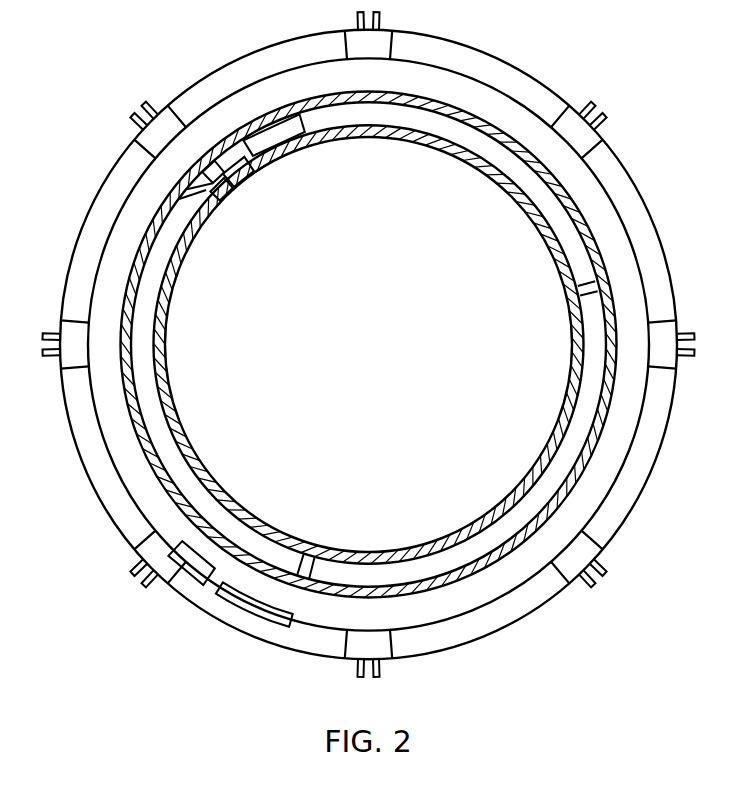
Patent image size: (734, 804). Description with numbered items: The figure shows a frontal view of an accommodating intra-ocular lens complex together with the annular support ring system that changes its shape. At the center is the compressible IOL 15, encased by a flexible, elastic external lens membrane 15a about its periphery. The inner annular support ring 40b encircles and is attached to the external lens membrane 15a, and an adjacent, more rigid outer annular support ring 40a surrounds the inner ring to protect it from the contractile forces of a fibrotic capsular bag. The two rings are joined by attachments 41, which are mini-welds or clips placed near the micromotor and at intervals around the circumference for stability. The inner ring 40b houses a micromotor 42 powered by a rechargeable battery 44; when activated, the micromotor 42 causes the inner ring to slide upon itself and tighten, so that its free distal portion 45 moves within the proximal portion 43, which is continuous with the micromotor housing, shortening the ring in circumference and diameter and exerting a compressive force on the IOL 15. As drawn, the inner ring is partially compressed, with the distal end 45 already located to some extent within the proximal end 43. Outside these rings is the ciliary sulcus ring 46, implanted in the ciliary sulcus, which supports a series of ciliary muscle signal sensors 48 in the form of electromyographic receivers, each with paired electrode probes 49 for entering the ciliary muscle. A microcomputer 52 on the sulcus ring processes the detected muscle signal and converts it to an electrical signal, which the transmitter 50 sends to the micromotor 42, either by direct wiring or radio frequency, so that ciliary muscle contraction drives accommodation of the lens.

The intra-ocular lens 15 is at (380, 356).
The external lens membrane 15a is at (503, 497).
The outer annular support ring 40a is at (131, 289).
The inner annular support ring 40b is at (553, 256).
The attachment 41 is at (207, 172).
The micromotor 42 is at (276, 147).
The proximal portion 43 is at (200, 200).
The rechargeable battery 44 is at (238, 180).
The distal portion 45 is at (226, 192).
The ciliary sulcus ring 46 is at (89, 222).
The ciliary muscle signal sensor 48 is at (163, 112).
The ciliary muscle probe 49 is at (147, 101).
The transmitter 50 is at (243, 606).
The microcomputer 52 is at (195, 590).